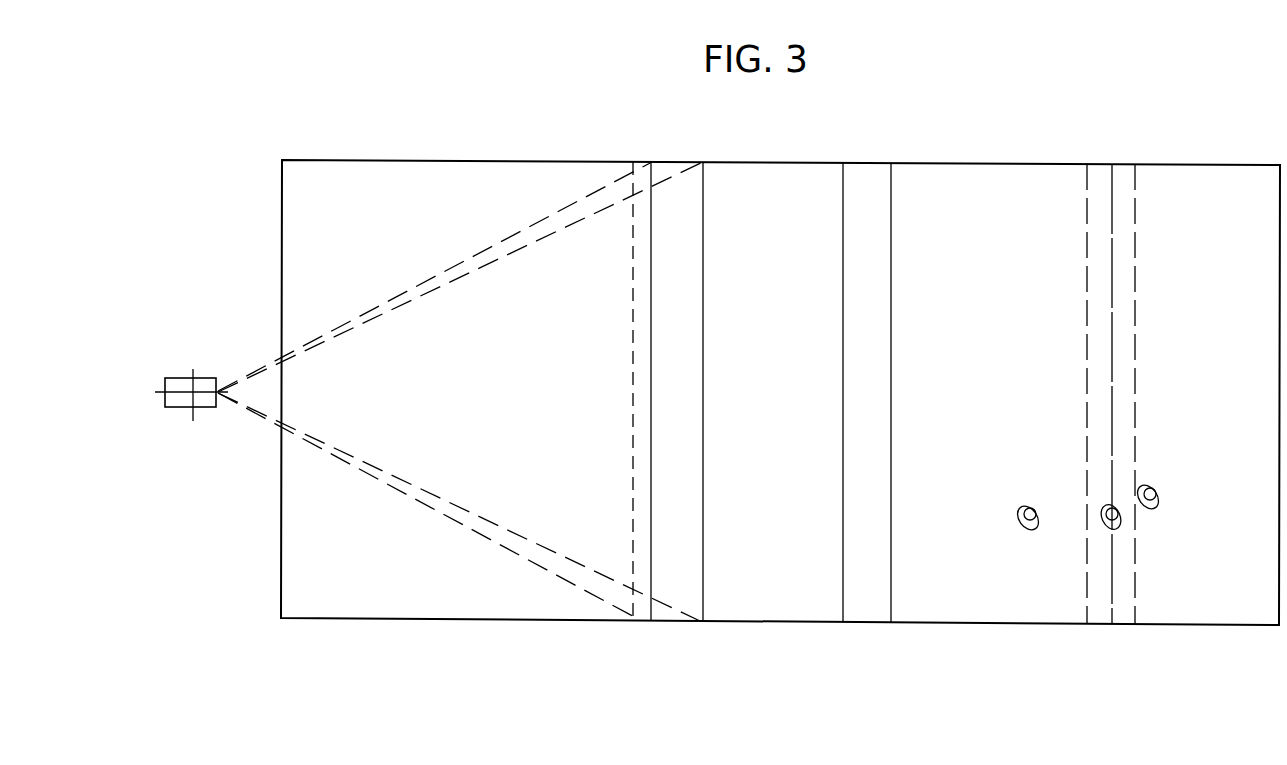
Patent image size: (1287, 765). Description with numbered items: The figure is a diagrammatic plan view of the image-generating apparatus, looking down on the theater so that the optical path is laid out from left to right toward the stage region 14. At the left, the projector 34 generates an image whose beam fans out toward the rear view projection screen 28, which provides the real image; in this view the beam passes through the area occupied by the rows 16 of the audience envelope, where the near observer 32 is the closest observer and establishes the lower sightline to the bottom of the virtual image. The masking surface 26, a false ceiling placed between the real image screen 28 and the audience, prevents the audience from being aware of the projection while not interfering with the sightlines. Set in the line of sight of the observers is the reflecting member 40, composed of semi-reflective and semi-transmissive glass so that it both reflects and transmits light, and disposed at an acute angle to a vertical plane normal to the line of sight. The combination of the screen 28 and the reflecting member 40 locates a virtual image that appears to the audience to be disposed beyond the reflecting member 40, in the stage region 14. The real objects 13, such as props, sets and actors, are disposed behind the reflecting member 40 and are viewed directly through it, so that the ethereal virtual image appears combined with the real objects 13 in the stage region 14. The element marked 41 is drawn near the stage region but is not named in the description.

The real objects 13 is at (1158, 488).
The stage region 14 is at (1039, 630).
The rows 16 is at (468, 392).
The masking surface 26 is at (511, 625).
The rear view projection screen 28 is at (668, 161).
The near observer 32 is at (632, 228).
The projector 34 is at (170, 379).
The reflecting member 40 is at (855, 163).
The detection plate 41 is at (1100, 164).